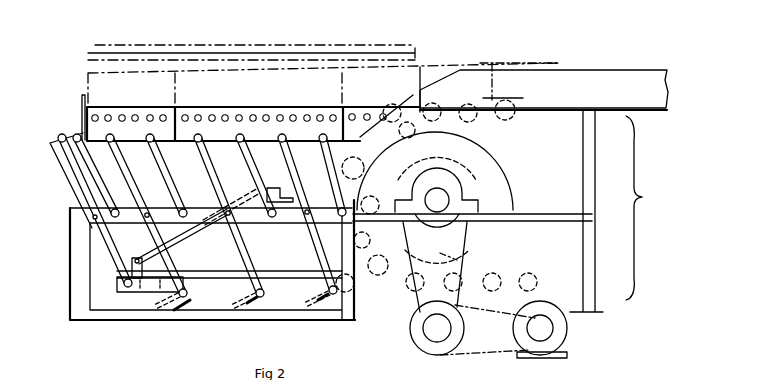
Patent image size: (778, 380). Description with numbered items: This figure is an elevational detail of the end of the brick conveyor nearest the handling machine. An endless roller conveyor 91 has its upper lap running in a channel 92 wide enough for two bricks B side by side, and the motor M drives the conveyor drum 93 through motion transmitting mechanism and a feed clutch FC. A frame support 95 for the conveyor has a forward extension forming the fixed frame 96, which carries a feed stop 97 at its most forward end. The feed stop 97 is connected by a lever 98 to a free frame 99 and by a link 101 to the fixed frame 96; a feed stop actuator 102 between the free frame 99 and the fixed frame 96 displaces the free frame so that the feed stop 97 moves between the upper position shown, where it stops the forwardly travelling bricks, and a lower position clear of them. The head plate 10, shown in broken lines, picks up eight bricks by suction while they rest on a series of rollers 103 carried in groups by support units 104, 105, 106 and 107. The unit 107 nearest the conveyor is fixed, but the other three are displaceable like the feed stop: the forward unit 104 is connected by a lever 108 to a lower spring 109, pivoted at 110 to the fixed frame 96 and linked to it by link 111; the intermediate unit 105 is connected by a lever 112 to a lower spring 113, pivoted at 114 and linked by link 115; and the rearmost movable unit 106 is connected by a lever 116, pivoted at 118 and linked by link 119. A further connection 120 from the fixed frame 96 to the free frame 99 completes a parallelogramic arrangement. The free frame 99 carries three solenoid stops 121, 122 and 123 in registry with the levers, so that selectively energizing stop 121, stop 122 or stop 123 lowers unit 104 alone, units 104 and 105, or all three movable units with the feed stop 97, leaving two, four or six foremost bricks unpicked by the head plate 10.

The head plate 10 is at (150, 56).
The bricks B is at (106, 73).
The channel 92 is at (537, 70).
The endless roller conveyor 91 is at (515, 125).
The feed stop 97 is at (80, 108).
The rollers 103 is at (148, 114).
The support unit 104 is at (90, 118).
The support unit 107 is at (362, 106).
The lever 98 is at (65, 163).
The link 101 is at (100, 190).
The lever 108 is at (137, 188).
The pivot 110 is at (157, 199).
The link 111 is at (157, 160).
The lever 112 is at (173, 177).
The support unit 105 is at (229, 215).
The link 115 is at (256, 175).
The lever 116 is at (291, 166).
The support unit 106 is at (322, 147).
The link 119 is at (332, 186).
The pivot 114 is at (243, 225).
The connection 120 is at (282, 240).
The pivot 118 is at (294, 227).
The fixed frame 96 is at (70, 268).
The frame support 95 is at (540, 213).
The conveyor drum 93 is at (478, 248).
The feed stop actuator 102 is at (190, 232).
The solenoid stop 121 is at (158, 258).
The solenoid stop 122 is at (245, 275).
The free frame 99 is at (132, 292).
The lower spring 109 is at (180, 298).
The lower spring 113 is at (257, 298).
The solenoid stop 123 is at (353, 277).
The feed clutch FC is at (424, 335).
The motor M is at (566, 330).